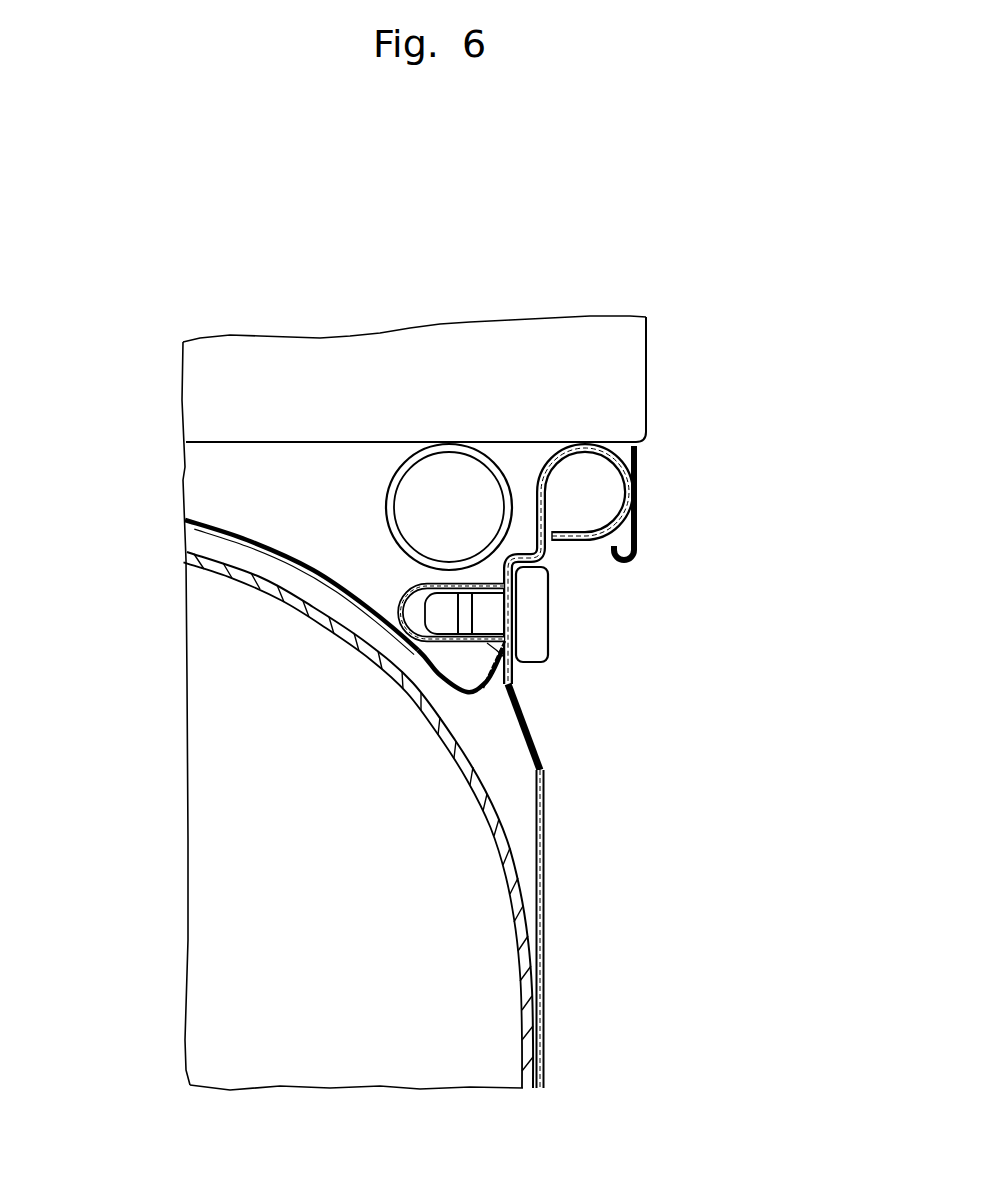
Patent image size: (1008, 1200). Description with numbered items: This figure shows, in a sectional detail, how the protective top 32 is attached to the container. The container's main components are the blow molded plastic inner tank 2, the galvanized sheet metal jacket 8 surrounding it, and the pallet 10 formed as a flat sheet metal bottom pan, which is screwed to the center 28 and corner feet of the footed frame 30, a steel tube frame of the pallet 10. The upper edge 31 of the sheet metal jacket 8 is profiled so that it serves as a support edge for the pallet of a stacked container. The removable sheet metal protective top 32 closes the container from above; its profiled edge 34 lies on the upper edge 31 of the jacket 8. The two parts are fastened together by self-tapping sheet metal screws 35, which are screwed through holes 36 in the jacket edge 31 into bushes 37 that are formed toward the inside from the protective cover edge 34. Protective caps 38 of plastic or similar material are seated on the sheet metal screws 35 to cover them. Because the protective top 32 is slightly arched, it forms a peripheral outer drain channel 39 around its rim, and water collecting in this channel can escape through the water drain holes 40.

The plastic inner tank 2 is at (410, 692).
The jacket 8 is at (542, 932).
The pallet 10 is at (488, 283).
The center foot 28 is at (637, 365).
The footed frame 30 is at (386, 507).
The upper edge 31 is at (632, 497).
The protective top 32 is at (290, 560).
The profiled edge 34 is at (635, 470).
The self-tapping sheet metal screws 35 is at (538, 628).
The holes 36 is at (548, 588).
The bushes 37 is at (513, 677).
The protective caps 38 is at (397, 611).
The peripheral outer drain channel 39 is at (450, 695).
The water drain holes 40 is at (470, 697).